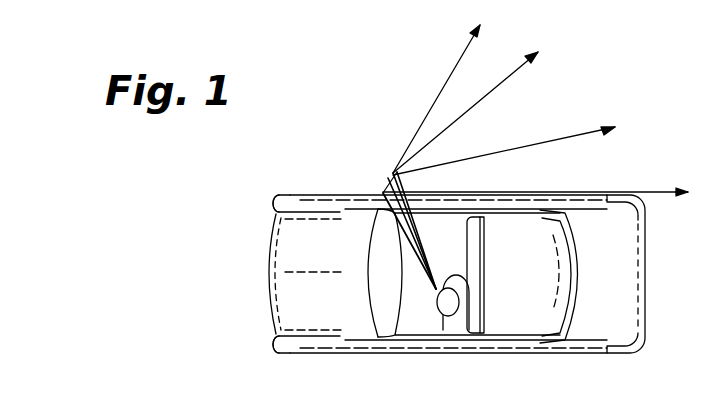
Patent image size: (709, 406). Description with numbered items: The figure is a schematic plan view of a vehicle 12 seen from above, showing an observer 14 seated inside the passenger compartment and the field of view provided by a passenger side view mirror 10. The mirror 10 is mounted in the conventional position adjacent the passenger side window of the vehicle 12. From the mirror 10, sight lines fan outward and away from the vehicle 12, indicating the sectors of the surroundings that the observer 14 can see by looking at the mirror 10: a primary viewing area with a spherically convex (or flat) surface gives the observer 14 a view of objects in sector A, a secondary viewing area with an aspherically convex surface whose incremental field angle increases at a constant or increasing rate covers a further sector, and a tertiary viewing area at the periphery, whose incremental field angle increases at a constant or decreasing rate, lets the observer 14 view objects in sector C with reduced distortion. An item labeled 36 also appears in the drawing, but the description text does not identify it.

The mirror 10 is at (383, 181).
The vehicle 12 is at (285, 243).
The observer 14 is at (472, 337).
The object 36 is at (273, 404).